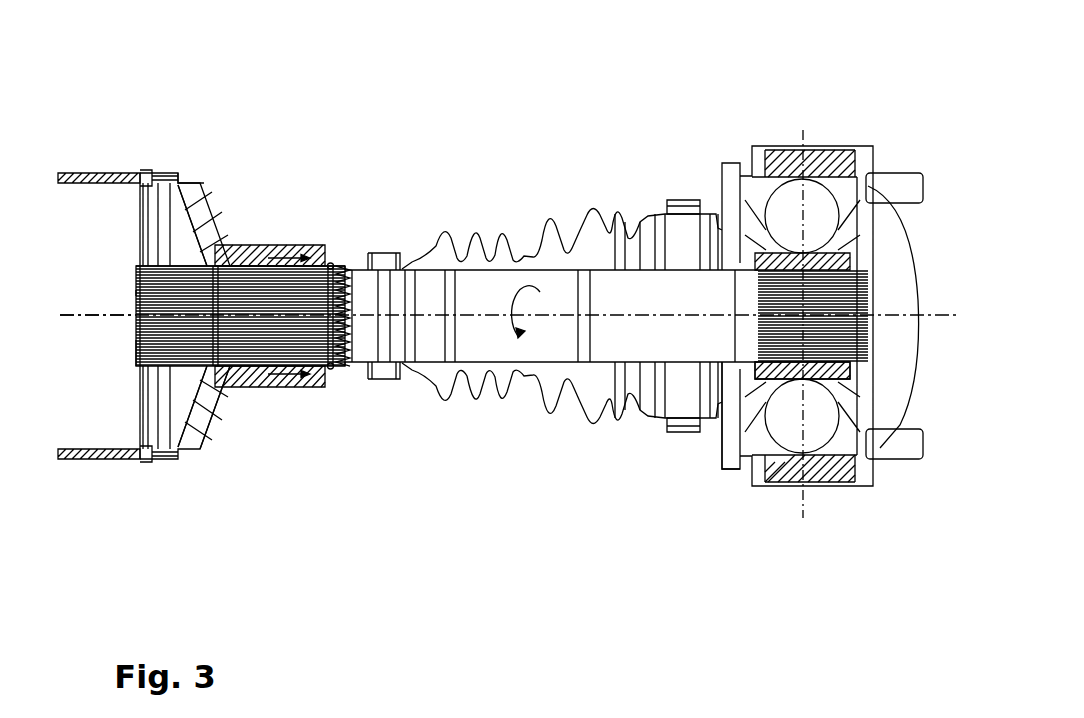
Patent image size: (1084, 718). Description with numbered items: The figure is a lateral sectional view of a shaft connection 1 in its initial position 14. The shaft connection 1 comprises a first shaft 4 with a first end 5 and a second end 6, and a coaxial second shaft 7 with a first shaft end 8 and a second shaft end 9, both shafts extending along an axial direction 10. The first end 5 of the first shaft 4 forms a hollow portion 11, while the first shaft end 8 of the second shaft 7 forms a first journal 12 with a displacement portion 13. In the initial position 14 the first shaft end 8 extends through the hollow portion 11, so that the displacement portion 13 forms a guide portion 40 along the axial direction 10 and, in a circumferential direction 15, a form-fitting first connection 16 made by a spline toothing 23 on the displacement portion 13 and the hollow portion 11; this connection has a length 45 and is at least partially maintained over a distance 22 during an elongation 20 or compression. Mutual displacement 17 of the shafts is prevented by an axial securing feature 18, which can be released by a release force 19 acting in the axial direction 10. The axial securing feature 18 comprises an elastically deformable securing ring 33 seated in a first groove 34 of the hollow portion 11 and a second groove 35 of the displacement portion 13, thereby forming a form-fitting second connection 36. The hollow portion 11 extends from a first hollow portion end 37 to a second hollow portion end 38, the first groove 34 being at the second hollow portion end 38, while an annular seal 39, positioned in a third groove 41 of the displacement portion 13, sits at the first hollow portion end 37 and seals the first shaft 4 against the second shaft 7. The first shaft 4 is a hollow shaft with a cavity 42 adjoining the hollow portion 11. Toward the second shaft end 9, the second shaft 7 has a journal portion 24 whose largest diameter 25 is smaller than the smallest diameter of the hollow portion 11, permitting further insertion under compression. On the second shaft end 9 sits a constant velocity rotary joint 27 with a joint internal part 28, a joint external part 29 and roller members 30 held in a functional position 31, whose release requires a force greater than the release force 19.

The shaft connection 1 is at (717, 70).
The first shaft 4 is at (177, 173).
The first end 5 is at (380, 380).
The second end 6 is at (140, 170).
The second shaft 7 is at (608, 212).
The first shaft end 8 is at (135, 268).
The second shaft end 9 is at (868, 352).
The axial direction 10 is at (107, 315).
The hollow portion 11 is at (210, 266).
The first journal 12 is at (500, 228).
The displacement portion 13 is at (343, 280).
The initial position 14 is at (365, 152).
The circumferential direction 15 is at (542, 309).
The form-fitting first connection 16 is at (325, 153).
The displacement 17 is at (295, 274).
The axial securing feature 18 is at (213, 256).
The release force 19 is at (135, 293).
The elongation 20 is at (289, 349).
The distance 22 is at (140, 487).
The spline toothing 23 is at (190, 398).
The journal portion 24 is at (343, 73).
The largest diameter 25 is at (490, 270).
The constant velocity rotary joint 27 is at (879, 114).
The joint internal part 28 is at (918, 278).
The joint external part 29 is at (830, 165).
The roller members 30 is at (815, 216).
The functional position 31 is at (725, 436).
The securing ring 33 is at (226, 262).
The first groove 34 is at (220, 370).
The second groove 35 is at (137, 352).
The form-fitting second connection 36 is at (205, 183).
The first hollow portion end 37 is at (348, 252).
The second hollow portion end 38 is at (213, 264).
The annular seal 39 is at (340, 382).
The guide portion 40 is at (325, 495).
The third groove 41 is at (336, 234).
The cavity 42 is at (155, 425).
The length 45 is at (320, 153).